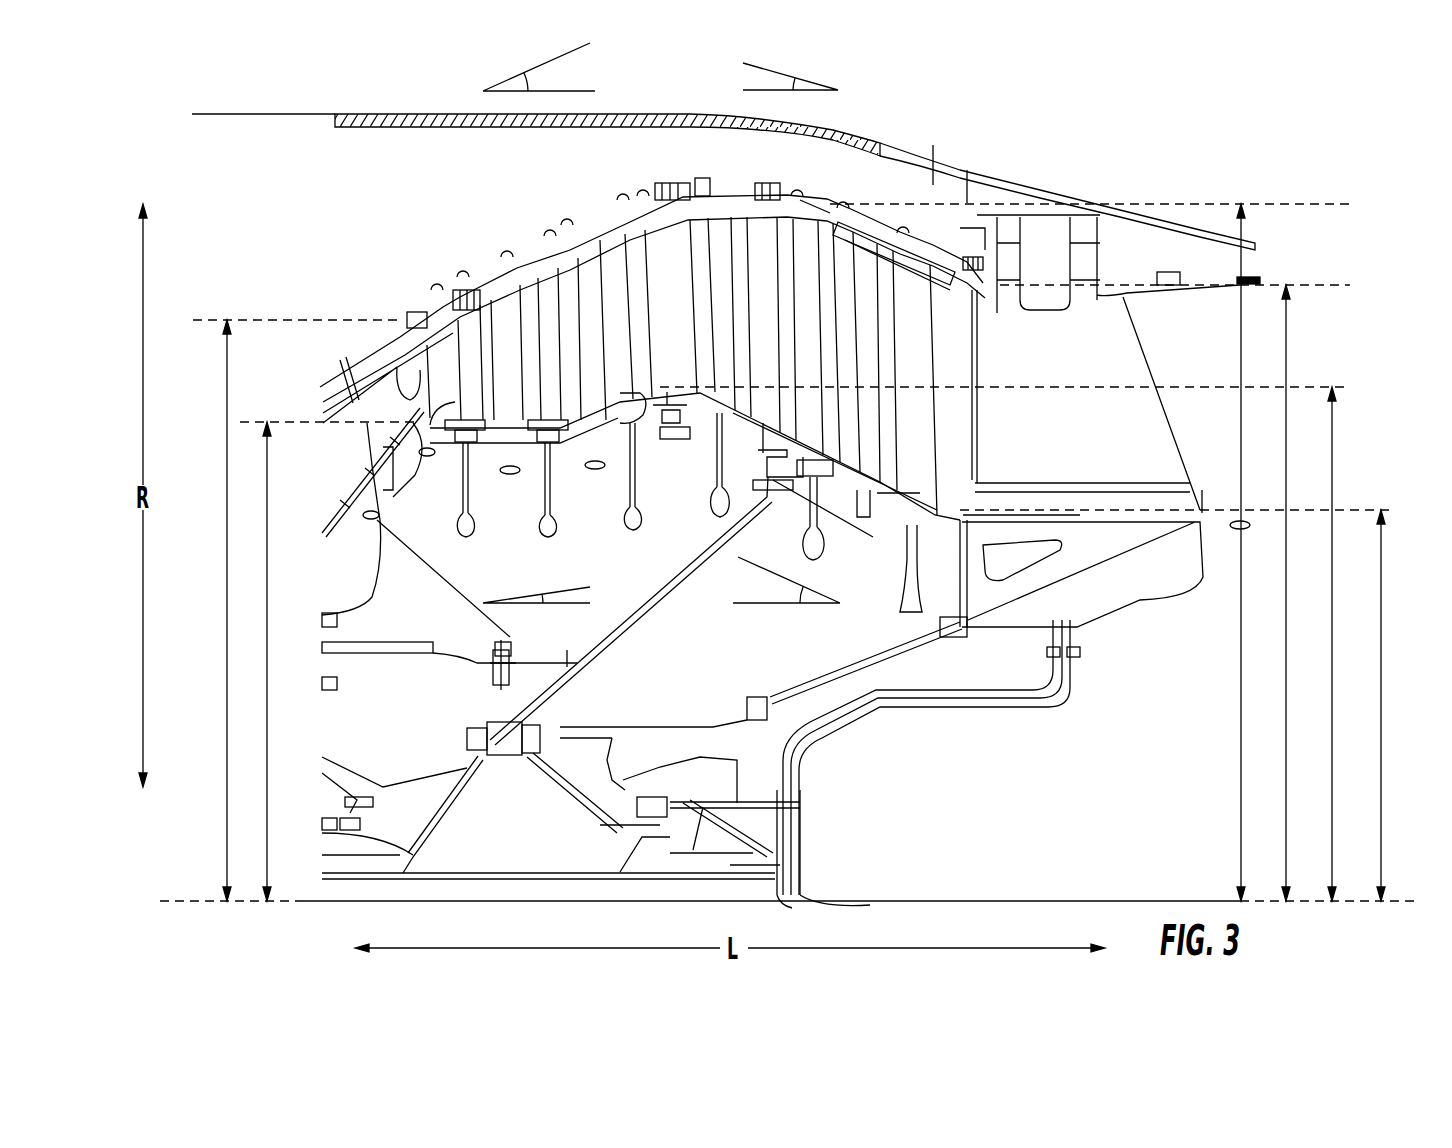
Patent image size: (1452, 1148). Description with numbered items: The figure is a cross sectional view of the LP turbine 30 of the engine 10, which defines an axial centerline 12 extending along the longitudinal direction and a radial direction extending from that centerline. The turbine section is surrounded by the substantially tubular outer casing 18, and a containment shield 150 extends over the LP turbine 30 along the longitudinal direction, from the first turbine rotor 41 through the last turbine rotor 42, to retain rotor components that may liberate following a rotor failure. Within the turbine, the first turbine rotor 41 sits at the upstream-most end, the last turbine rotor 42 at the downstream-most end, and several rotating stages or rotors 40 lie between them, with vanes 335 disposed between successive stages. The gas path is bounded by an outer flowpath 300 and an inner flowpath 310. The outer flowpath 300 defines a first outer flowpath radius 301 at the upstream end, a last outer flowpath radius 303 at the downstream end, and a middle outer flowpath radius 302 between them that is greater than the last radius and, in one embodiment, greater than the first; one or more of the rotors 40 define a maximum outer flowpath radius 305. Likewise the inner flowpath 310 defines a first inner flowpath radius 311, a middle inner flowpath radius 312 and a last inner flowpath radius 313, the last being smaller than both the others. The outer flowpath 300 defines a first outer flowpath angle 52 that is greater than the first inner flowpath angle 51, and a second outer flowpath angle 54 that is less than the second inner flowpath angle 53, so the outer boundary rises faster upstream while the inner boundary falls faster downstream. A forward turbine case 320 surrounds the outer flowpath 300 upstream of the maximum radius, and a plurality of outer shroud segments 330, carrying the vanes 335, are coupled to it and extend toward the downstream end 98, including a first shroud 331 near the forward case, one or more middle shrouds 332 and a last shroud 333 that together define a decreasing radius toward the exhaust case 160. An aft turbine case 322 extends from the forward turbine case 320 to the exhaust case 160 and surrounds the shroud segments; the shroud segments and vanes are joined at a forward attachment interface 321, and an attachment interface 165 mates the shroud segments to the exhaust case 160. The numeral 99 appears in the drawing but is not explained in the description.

The engine 10 is at (312, 92).
The axial centerline 12 is at (947, 897).
The outer casing 18 is at (858, 145).
The LP turbine 30 is at (425, 188).
The rotors 40 is at (552, 527).
The first turbine rotor 41 is at (474, 528).
The last turbine rotor 42 is at (900, 605).
The first inner flowpath angle 51 is at (545, 598).
The first outer flowpath angle 52 is at (530, 78).
The second inner flowpath angle 53 is at (803, 597).
The second outer flowpath angle 54 is at (796, 84).
The downstream end 98 is at (1226, 453).
The hub 99 is at (306, 464).
The containment shield 150 is at (486, 112).
The exhaust case 160 is at (1066, 369).
The attachment interface 165 is at (967, 235).
The outer flowpath 300 is at (350, 428).
The first outer flowpath radius 301 is at (227, 417).
The middle outer flowpath radius 302 is at (1255, 238).
The last outer flowpath radius 303 is at (1287, 372).
The maximum outer flowpath radius 305 is at (1158, 203).
The inner flowpath 310 is at (345, 476).
The first inner flowpath radius 311 is at (268, 615).
The middle inner flowpath radius 312 is at (1333, 485).
The last inner flowpath radius 313 is at (1382, 650).
The forward turbine case 320 is at (683, 200).
The forward attachment interface 321 is at (702, 170).
The aft turbine case 322 is at (848, 197).
The outer shroud segments 330 is at (887, 243).
The first shroud 331 is at (730, 197).
The middle shrouds 332 is at (818, 208).
The last shroud 333 is at (978, 243).
The vanes 335 is at (522, 333).